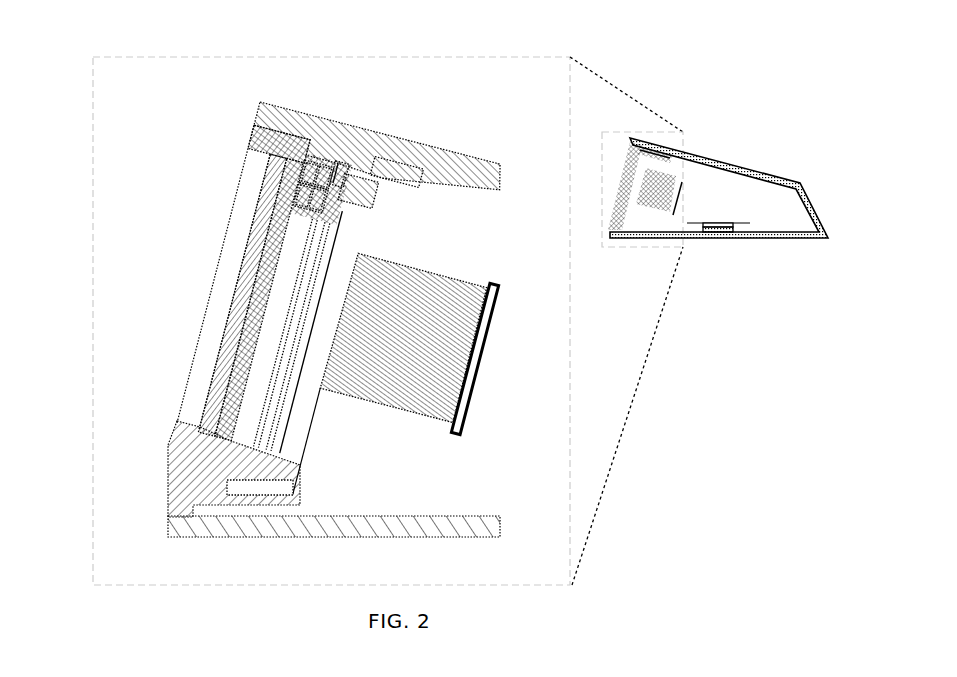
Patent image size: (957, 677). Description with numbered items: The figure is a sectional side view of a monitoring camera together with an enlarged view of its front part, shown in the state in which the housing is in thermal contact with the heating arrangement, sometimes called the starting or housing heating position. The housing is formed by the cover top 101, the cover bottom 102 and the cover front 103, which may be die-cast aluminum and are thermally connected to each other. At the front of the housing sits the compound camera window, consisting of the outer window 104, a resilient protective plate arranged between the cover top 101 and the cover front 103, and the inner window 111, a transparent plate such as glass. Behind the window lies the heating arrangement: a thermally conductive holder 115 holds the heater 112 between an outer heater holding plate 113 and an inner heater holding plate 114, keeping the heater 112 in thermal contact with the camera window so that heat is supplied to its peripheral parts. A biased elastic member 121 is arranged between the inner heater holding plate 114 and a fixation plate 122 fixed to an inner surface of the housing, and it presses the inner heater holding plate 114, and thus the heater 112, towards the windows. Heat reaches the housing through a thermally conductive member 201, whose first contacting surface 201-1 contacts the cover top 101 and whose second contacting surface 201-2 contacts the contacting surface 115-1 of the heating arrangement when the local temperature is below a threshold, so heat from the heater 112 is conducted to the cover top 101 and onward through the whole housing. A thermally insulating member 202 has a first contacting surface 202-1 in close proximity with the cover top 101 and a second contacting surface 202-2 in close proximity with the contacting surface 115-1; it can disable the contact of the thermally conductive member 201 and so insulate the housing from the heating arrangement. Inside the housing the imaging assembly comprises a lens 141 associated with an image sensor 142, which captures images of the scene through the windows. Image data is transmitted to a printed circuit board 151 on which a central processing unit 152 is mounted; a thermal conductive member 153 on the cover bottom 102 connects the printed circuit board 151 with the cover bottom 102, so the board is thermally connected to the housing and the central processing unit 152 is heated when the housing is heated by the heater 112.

The cover top 101 is at (477, 170).
The cover bottom 102 is at (460, 528).
The cover front 103 is at (265, 125).
The outer window 104 is at (233, 317).
The inner window 111 is at (247, 349).
The heater 112 is at (335, 207).
The outer heater holding plate 113 is at (312, 214).
The inner heater holding plate 114 is at (342, 212).
The thermally conductive holder 115 is at (341, 166).
The contacting surface of the heating arrangement 115-1 is at (334, 165).
The elastic member 121 is at (360, 192).
The fixation plate 122 is at (400, 172).
The lens 141 is at (437, 368).
The image sensor 142 is at (482, 354).
The printed circuit board 151 is at (749, 224).
The central processing unit 152 is at (728, 227).
The thermal conductive member 153 is at (712, 233).
The thermally conductive member 201 is at (313, 173).
The first contacting surface of the thermally conductive member 201-1 is at (317, 173).
The second contacting surface of the thermally conductive member 201-2 is at (326, 171).
The thermally insulating member 202 is at (315, 192).
The first contacting surface of the thermally insulating member 202-1 is at (313, 193).
The second contacting surface of the thermally insulating member 202-2 is at (317, 187).